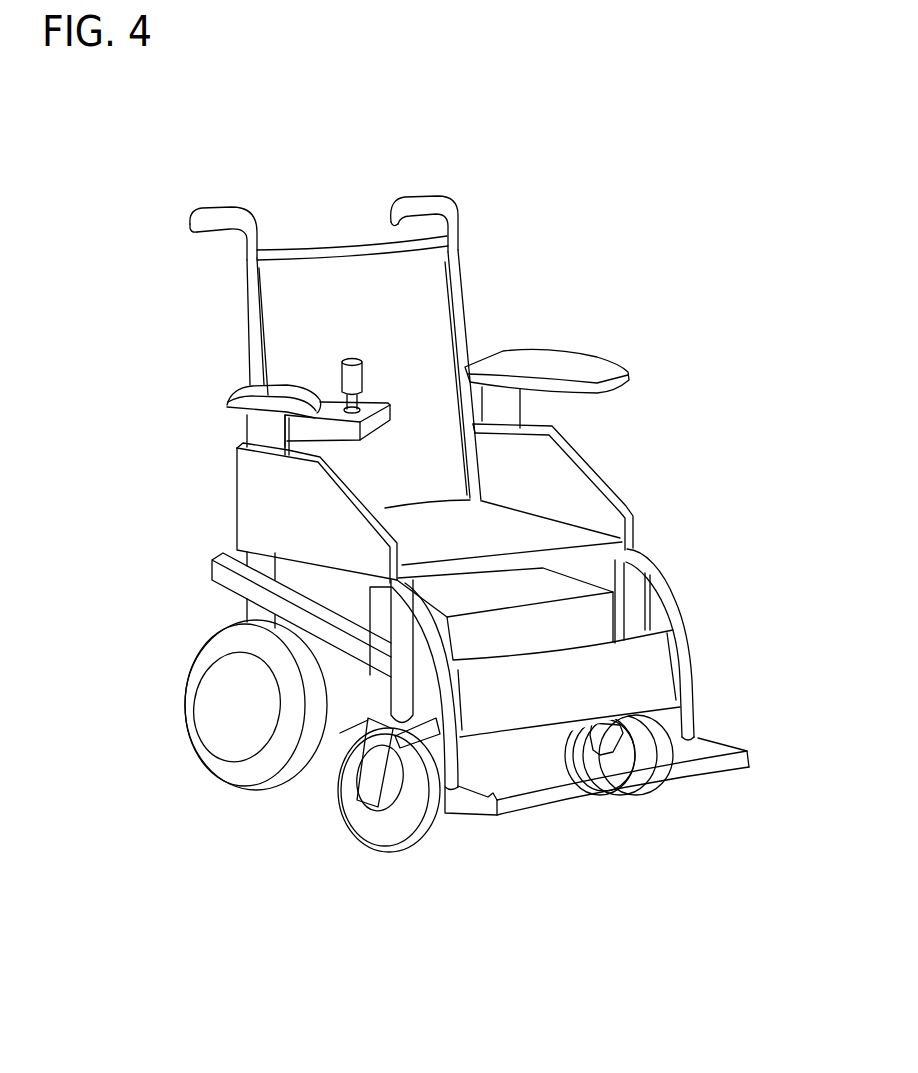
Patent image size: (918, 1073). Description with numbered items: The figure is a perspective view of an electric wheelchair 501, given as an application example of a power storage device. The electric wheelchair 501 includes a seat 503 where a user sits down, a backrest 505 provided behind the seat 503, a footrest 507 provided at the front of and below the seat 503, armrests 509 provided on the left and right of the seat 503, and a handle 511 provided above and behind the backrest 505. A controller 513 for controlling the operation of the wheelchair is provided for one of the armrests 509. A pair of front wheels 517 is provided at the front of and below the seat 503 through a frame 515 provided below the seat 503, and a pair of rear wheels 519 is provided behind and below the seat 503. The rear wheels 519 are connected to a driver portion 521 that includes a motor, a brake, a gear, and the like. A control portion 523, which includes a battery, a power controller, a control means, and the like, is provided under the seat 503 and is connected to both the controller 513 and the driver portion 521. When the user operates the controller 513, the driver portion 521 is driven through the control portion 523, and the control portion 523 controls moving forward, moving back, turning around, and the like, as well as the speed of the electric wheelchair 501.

The electric wheelchair 501 is at (589, 212).
The seat 503 is at (545, 535).
The backrest 505 is at (408, 354).
The footrest 507 is at (553, 790).
The armrests 509 is at (587, 371).
The handle 511 is at (424, 204).
The controller 513 is at (353, 377).
The frame 515 is at (630, 607).
The front wheels 517 is at (388, 820).
The rear wheels 519 is at (234, 733).
The driver portion 521 is at (350, 700).
The control portion 523 is at (597, 627).